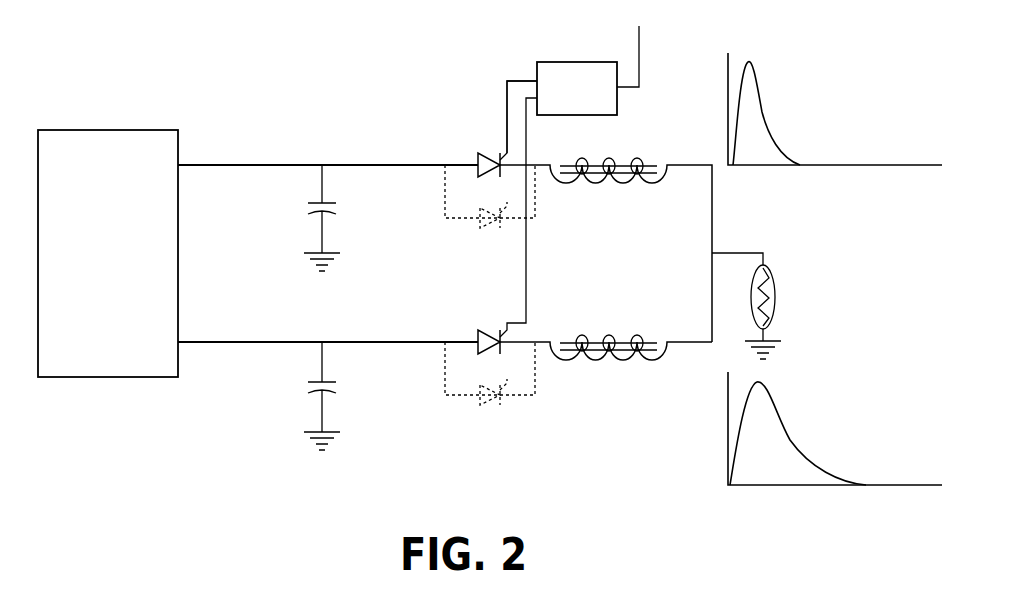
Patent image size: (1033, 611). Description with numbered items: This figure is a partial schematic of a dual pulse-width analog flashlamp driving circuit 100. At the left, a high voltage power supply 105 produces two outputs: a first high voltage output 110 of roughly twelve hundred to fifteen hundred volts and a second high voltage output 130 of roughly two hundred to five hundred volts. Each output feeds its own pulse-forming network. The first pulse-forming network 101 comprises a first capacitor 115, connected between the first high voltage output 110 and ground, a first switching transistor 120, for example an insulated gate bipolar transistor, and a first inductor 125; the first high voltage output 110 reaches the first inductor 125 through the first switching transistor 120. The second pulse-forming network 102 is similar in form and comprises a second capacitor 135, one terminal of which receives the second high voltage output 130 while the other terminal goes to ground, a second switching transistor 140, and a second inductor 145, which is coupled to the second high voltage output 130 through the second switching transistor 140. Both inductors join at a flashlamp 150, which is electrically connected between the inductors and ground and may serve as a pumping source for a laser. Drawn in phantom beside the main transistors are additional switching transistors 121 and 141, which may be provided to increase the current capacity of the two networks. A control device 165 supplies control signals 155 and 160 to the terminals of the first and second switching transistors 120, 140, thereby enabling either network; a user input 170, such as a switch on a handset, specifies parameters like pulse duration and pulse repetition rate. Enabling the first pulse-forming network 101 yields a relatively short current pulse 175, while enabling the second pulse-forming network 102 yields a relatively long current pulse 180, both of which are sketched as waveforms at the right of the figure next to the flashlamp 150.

The dual pulse-width analog flashlamp driving circuit 100 is at (337, 55).
The first pulse-forming network 101 is at (394, 158).
The second pulse-forming network 102 is at (427, 352).
The high voltage power supply 105 is at (107, 130).
The first high voltage output 110 is at (231, 160).
The first capacitor 115 is at (314, 203).
The first switching transistor 120 is at (478, 152).
The additional switching transistor 121 is at (480, 226).
The first inductor 125 is at (618, 186).
The second high voltage output 130 is at (232, 345).
The second capacitor 135 is at (314, 381).
The second switching transistor 140 is at (478, 332).
The additional switching transistor 141 is at (480, 404).
The second inductor 145 is at (608, 336).
The flashlamp 150 is at (768, 273).
The control signal 155 is at (507, 118).
The control signal 160 is at (526, 274).
The control device 165 is at (580, 62).
The user input 170 is at (639, 62).
The relatively short current pulse 175 is at (763, 116).
The relatively long current pulse 180 is at (779, 417).